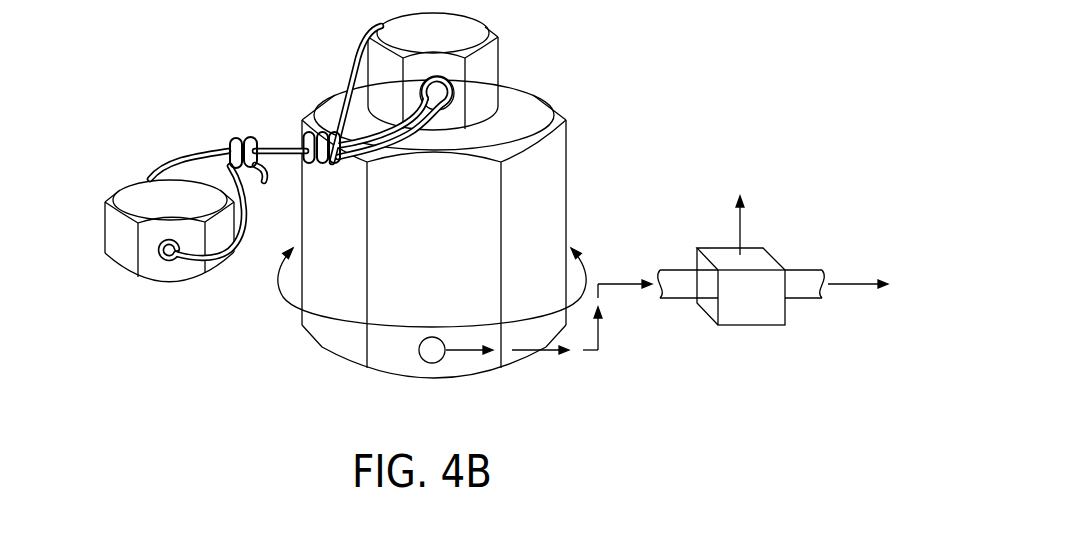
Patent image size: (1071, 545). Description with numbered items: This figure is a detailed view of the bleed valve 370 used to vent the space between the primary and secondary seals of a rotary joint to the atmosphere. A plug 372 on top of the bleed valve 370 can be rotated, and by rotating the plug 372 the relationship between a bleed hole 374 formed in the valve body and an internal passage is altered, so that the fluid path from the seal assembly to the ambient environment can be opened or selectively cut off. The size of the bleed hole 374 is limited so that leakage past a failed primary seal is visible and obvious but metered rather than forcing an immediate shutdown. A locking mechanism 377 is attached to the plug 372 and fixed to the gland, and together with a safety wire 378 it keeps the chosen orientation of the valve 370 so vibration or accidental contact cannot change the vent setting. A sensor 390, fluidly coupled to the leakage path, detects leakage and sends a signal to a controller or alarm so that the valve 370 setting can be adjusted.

The bleed valve 370 is at (567, 185).
The plug 372 is at (497, 58).
The bleed hole 374 is at (433, 363).
The locking mechanism 377 is at (108, 243).
The safety wire 378 is at (238, 138).
The sensor 390 is at (752, 312).